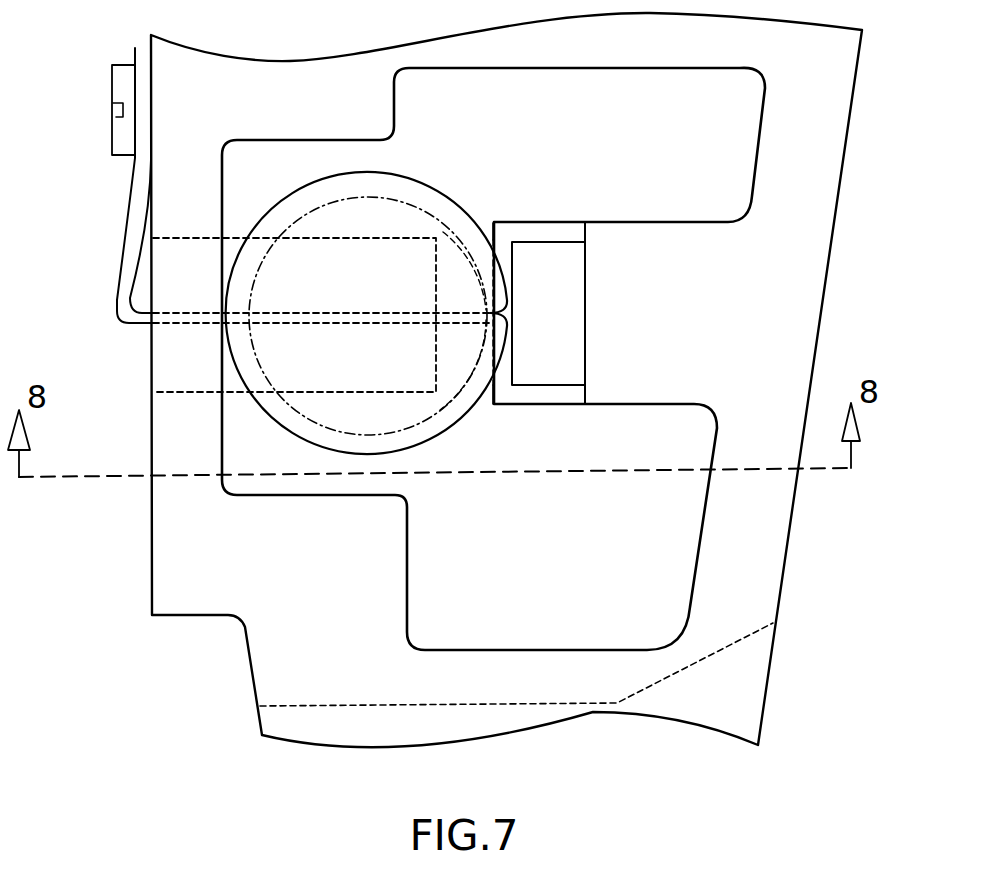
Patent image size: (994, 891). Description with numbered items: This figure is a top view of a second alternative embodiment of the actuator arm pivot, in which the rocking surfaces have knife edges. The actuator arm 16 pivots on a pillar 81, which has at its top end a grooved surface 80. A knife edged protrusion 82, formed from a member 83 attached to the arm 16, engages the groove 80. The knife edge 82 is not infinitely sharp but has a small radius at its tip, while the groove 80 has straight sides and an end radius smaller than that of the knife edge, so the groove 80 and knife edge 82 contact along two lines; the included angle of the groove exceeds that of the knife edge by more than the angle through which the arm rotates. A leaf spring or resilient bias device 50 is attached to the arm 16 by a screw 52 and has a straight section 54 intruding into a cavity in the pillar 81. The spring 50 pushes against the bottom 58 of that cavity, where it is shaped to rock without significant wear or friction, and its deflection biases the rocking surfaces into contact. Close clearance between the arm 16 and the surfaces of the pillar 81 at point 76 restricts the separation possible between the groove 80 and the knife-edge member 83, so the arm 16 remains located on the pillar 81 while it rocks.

The actuator arm 16 is at (252, 597).
The leaf spring 50 is at (122, 224).
The screw 52 is at (117, 122).
The straight section 54 is at (330, 317).
The bottom of cavity 58 is at (488, 314).
The close clearance point 76 is at (225, 298).
The grooved surface 80 is at (490, 312).
The pillar 81 is at (357, 215).
The knife edged protrusion 82 is at (507, 312).
The member 83 is at (553, 323).